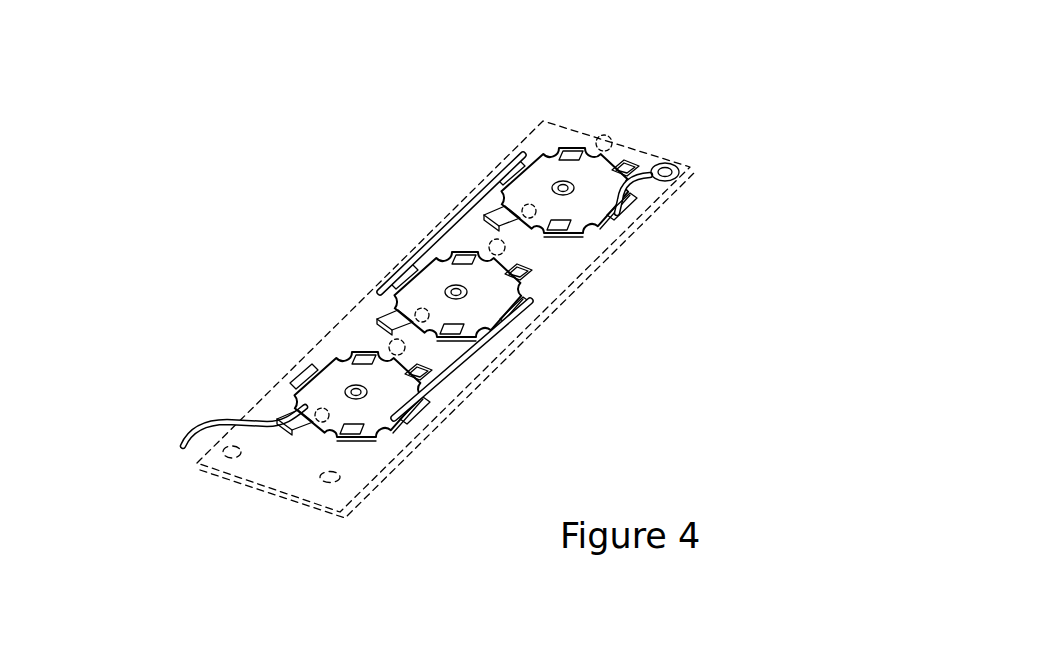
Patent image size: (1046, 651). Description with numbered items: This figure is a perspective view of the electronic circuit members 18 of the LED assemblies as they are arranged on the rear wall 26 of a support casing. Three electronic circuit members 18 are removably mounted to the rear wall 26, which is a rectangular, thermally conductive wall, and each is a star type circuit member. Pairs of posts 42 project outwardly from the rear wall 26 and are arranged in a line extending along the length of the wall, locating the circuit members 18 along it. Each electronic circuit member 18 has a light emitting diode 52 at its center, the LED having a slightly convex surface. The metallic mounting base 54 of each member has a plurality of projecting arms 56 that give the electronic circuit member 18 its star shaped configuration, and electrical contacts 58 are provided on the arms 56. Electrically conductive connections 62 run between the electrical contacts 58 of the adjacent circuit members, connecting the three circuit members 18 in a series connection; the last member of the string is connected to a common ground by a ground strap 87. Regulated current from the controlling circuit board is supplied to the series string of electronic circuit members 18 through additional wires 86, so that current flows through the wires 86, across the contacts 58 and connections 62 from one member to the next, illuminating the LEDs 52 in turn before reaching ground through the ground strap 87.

The electronic circuit member 18 is at (504, 285).
The rear wall 26 is at (265, 485).
The post 42 is at (606, 136).
The light emitting diode (LED) 52 is at (570, 192).
The metallic mounting base 54 is at (600, 188).
The projecting arm 56 is at (633, 157).
The electrical contact 58 is at (515, 157).
The electrically conductive connection 62 is at (442, 228).
The wire 86 is at (212, 420).
The ground strap 87 is at (677, 163).